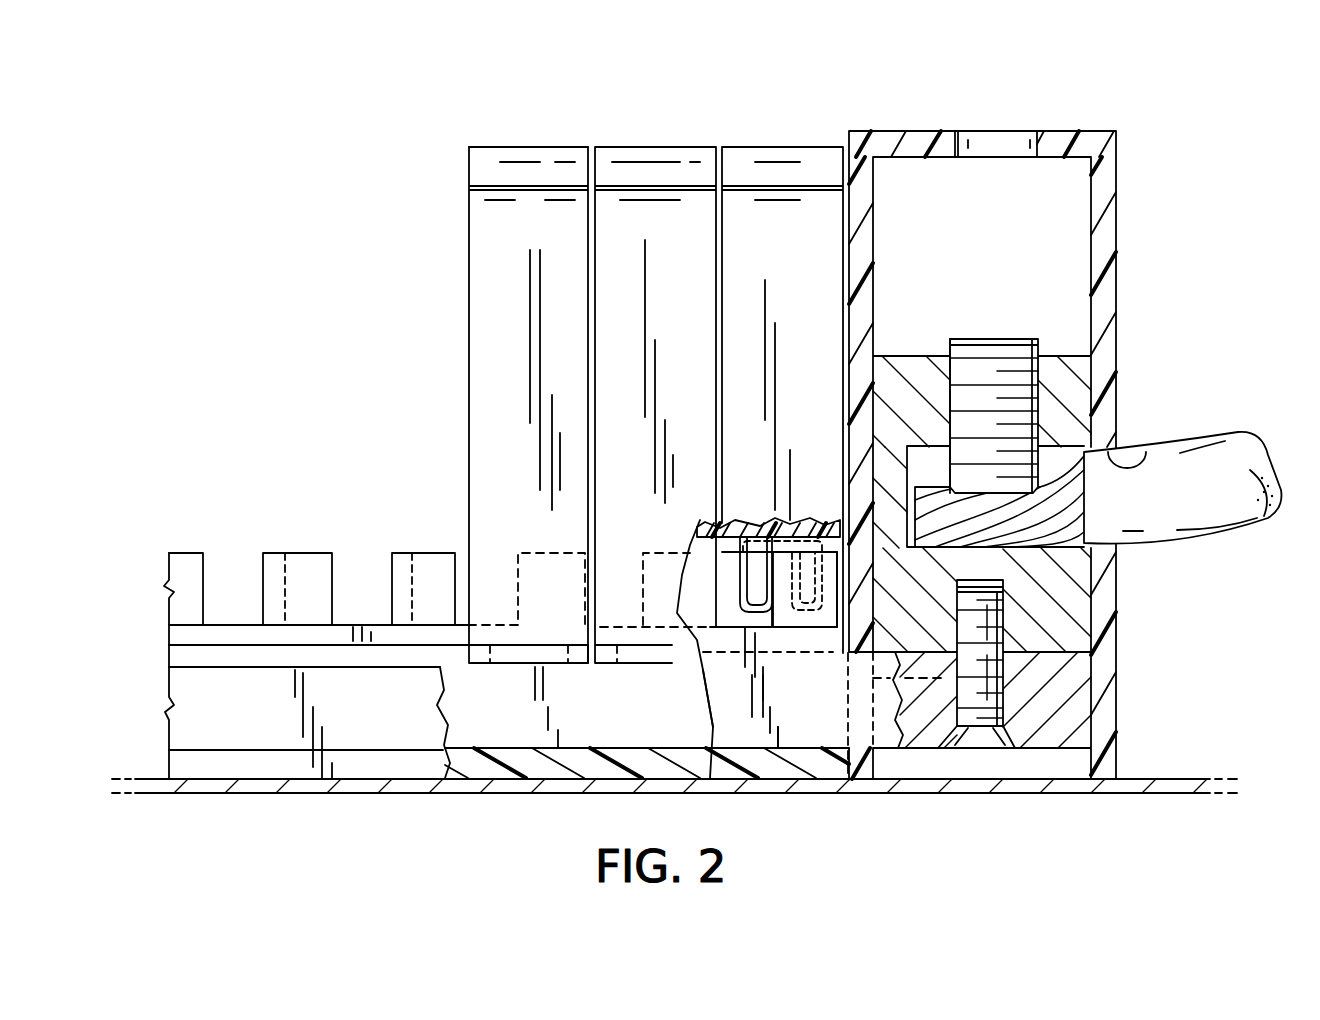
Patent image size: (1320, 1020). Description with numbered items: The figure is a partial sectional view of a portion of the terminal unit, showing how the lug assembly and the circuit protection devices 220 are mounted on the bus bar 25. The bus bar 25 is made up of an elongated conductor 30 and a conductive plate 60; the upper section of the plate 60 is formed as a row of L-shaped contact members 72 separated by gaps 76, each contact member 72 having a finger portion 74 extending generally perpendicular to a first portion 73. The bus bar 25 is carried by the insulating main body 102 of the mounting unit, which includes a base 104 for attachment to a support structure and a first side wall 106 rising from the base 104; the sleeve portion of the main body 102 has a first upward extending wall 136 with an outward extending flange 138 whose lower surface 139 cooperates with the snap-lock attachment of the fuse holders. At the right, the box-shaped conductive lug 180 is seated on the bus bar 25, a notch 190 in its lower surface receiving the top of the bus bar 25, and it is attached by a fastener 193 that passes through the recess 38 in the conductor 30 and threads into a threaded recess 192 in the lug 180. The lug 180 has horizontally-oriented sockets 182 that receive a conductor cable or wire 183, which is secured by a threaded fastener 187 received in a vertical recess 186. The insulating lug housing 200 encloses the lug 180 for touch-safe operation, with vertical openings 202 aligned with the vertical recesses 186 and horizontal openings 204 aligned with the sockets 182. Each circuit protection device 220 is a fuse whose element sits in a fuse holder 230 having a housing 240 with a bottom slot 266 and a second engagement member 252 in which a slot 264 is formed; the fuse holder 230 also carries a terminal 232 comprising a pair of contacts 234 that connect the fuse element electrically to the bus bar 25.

The bus bar 25 is at (183, 542).
The elongated conductor 30 is at (1082, 722).
The recess 38 is at (962, 712).
The conductive plate 60 is at (802, 722).
The L-shaped contact member 72 is at (306, 552).
The first portion 73 is at (435, 575).
The finger portion 74 is at (275, 567).
The gap 76 is at (228, 587).
The main body 102 is at (352, 777).
The base 104 is at (775, 765).
The first side wall 106 is at (193, 695).
The first upward extending wall 136 is at (510, 722).
The outward extending flange 138 is at (335, 637).
The lower surface 139 is at (405, 652).
The lug 180 is at (1077, 359).
The horizontally-oriented socket 182 is at (1058, 458).
The conductor cable or wire 183 is at (1198, 513).
The vertical recess 186 is at (1020, 352).
The fastener 187 is at (968, 352).
The notch 190 is at (1080, 650).
The threaded recess 192 is at (993, 618).
The fastener 193 is at (983, 740).
The lug housing 200 is at (1122, 174).
The vertical opening 202 is at (1010, 140).
The horizontal opening 204 is at (1150, 452).
The circuit protection device 220 is at (581, 146).
The fuse holder 230 is at (740, 147).
The terminal 232 is at (732, 533).
The contact 234 is at (768, 582).
The housing 240 is at (480, 283).
The second engagement member 252 is at (505, 667).
The slot 264 is at (552, 658).
The bottom slot 266 is at (833, 543).